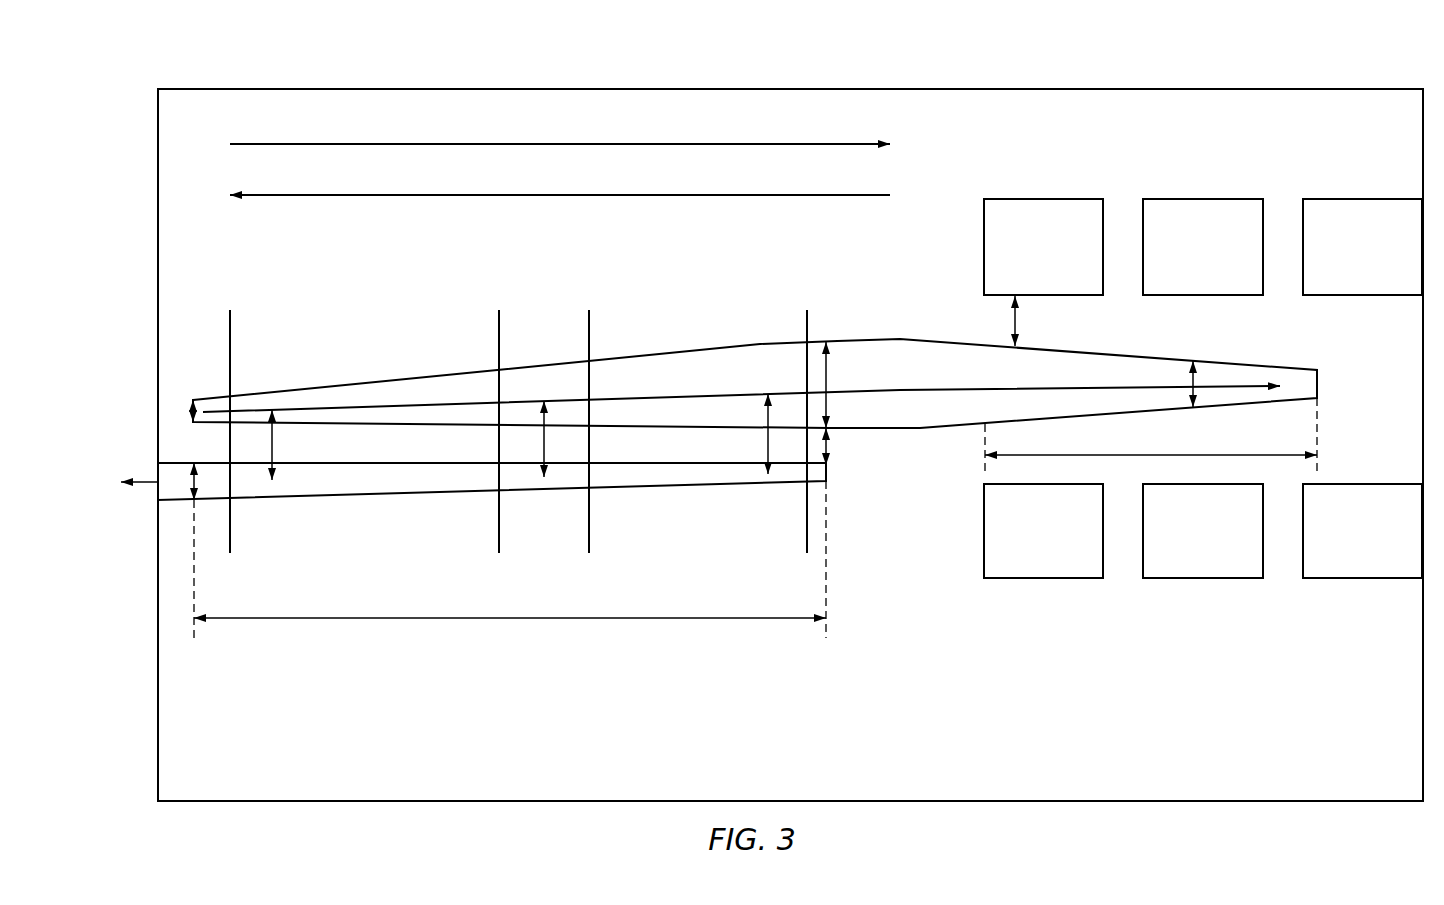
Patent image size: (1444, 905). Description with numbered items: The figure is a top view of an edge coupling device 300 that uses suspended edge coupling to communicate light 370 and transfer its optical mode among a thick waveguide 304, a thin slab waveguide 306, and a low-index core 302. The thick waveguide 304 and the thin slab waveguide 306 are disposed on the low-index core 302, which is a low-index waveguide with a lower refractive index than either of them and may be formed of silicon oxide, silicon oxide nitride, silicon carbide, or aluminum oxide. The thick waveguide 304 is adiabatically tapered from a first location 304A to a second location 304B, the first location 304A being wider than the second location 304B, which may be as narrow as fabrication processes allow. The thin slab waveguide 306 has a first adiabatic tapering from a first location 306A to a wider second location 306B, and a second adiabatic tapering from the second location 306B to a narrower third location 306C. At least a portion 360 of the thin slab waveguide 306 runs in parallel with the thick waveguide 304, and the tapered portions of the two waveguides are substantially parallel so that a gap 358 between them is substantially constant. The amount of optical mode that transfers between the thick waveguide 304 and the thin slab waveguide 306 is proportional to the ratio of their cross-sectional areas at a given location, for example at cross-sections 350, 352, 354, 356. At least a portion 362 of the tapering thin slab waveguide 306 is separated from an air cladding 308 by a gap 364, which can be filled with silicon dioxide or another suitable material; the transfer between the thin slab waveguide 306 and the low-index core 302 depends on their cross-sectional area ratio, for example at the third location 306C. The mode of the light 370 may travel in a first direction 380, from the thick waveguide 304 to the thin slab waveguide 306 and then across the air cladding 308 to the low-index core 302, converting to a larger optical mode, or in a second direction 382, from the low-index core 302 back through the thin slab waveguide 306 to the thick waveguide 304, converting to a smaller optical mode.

The edge coupling device 300 is at (152, 55).
The low-index core 302 is at (806, 772).
The thick waveguide 304 is at (402, 494).
The first location 304A is at (190, 476).
The second location 304B is at (830, 474).
The thin slab waveguide 306 is at (405, 378).
The first location 306A is at (190, 412).
The second location 306B is at (828, 364).
The third location 306C is at (1196, 378).
The air cladding 308 is at (1028, 257).
The cross-section 350 is at (232, 318).
The cross-section 352 is at (497, 318).
The cross-section 354 is at (587, 318).
The cross-section 356 is at (805, 318).
The gap 358 is at (830, 441).
The portion 360 is at (512, 621).
The portion 362 is at (1150, 454).
The gap 364 is at (1012, 318).
The light 370 is at (147, 487).
The first direction 380 is at (561, 144).
The second direction 382 is at (561, 195).